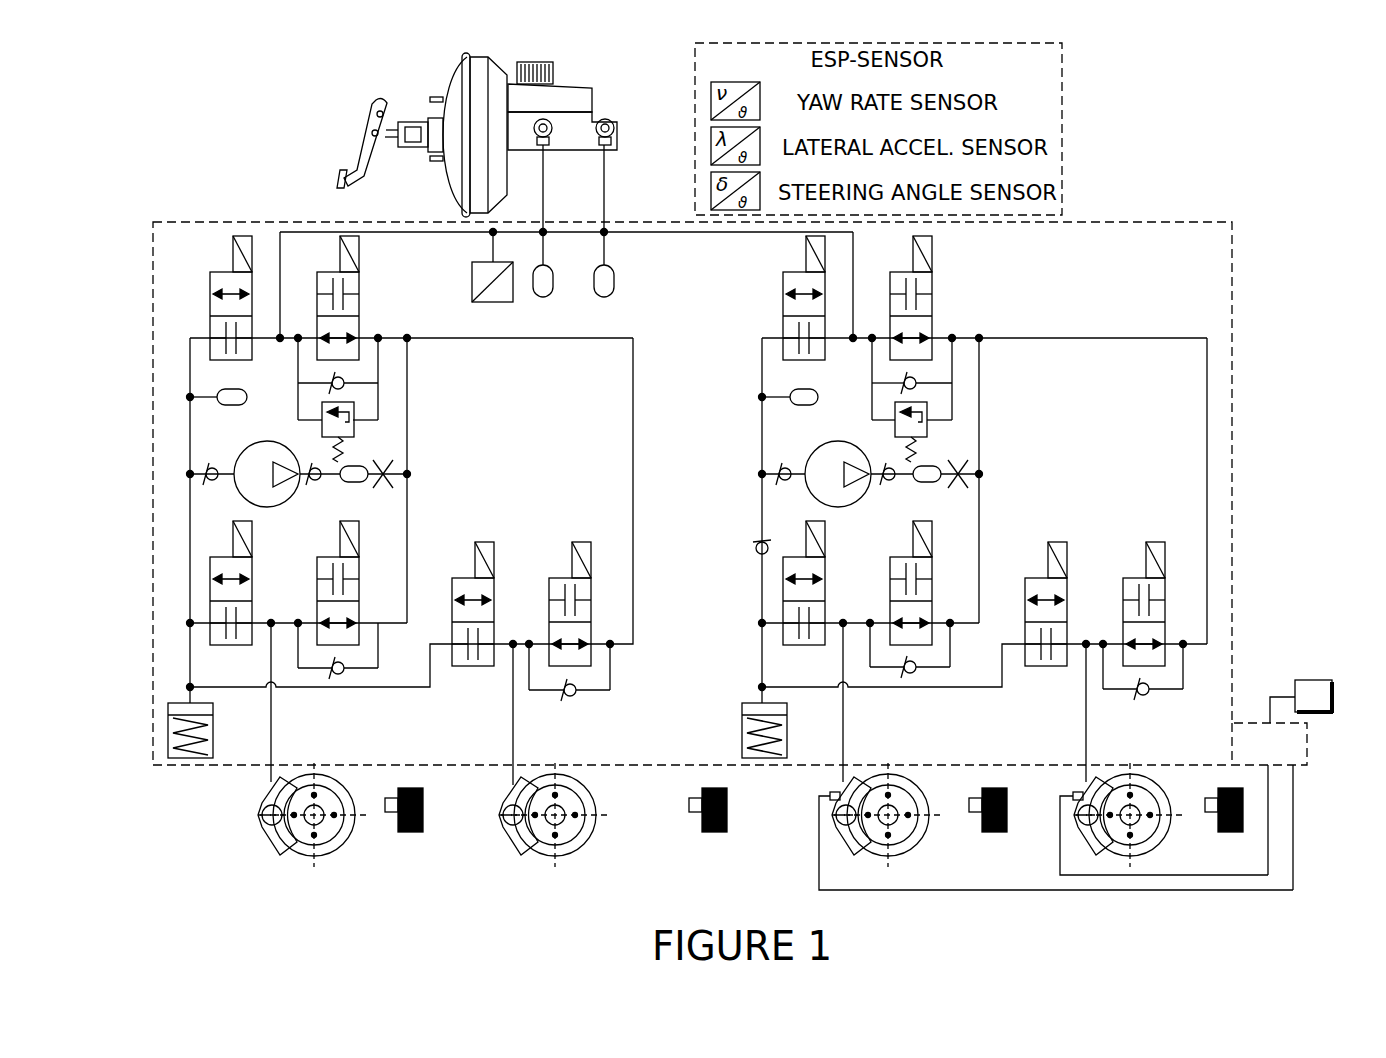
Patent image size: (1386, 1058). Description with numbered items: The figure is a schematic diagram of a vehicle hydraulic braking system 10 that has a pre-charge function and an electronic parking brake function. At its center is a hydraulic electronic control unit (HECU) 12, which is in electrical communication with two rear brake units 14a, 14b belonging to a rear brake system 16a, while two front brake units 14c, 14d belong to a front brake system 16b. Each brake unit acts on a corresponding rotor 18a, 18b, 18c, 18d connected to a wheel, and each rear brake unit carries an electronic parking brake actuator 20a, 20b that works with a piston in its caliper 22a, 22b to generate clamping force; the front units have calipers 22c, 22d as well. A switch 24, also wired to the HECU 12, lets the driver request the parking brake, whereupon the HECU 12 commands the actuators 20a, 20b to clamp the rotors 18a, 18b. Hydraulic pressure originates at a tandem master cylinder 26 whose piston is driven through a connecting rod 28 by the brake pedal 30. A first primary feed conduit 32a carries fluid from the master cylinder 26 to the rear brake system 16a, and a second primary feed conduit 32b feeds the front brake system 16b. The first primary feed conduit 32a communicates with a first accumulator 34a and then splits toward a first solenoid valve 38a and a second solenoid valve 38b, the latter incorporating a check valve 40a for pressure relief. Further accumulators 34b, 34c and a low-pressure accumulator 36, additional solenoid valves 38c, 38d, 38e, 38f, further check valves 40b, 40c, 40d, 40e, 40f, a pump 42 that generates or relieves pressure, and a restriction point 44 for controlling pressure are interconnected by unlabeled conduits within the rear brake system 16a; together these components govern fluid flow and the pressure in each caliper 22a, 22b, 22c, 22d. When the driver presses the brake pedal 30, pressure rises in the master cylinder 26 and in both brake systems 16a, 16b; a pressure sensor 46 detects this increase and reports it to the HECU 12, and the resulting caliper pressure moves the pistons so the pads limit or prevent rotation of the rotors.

The braking system 10 is at (1160, 152).
The hydraulic electronic control unit 12 is at (1300, 745).
The first rear brake unit 14a is at (927, 850).
The second rear brake unit 14b is at (1172, 840).
The front brake unit 14c is at (352, 855).
The front brake unit 14d is at (498, 853).
The rear brake system 16a is at (1119, 248).
The front brake system 16b is at (191, 248).
The first rotor 18a is at (920, 808).
The rotor 18b is at (1163, 808).
The rotor 18c is at (318, 857).
The rotor 18d is at (560, 857).
The electronic parking brake actuator 20a is at (830, 796).
The electronic parking brake actuator 20b is at (1073, 796).
The first caliper 22a is at (830, 830).
The caliper 22b is at (1068, 838).
The caliper 22c is at (262, 835).
The caliper 22d is at (508, 793).
The switch 24 is at (1333, 697).
The tandem master cylinder 26 is at (612, 108).
The connecting rod 28 is at (396, 140).
The brake pedal 30 is at (338, 178).
The first primary feed conduit 32a is at (604, 166).
The second primary feed conduit 32b is at (545, 180).
The first accumulator 34a is at (616, 282).
The accumulator 34b is at (808, 390).
The accumulator 34c is at (935, 466).
The low-pressure accumulator 36 is at (742, 730).
The first solenoid valve 38a is at (783, 300).
The second solenoid valve 38b is at (933, 302).
The solenoid valve 38c is at (1157, 540).
The solenoid valve 38d is at (1058, 540).
The solenoid valve 38e is at (783, 608).
The solenoid valve 38f is at (933, 580).
The check valve 40a is at (916, 384).
The check valve 40b is at (756, 548).
The check valve 40c is at (775, 472).
The check valve 40d is at (893, 480).
The check valve 40e is at (1149, 696).
The check valve 40f is at (916, 672).
The pump 42 is at (838, 441).
The restriction point 44 is at (979, 474).
The pressure sensor 46 is at (472, 282).